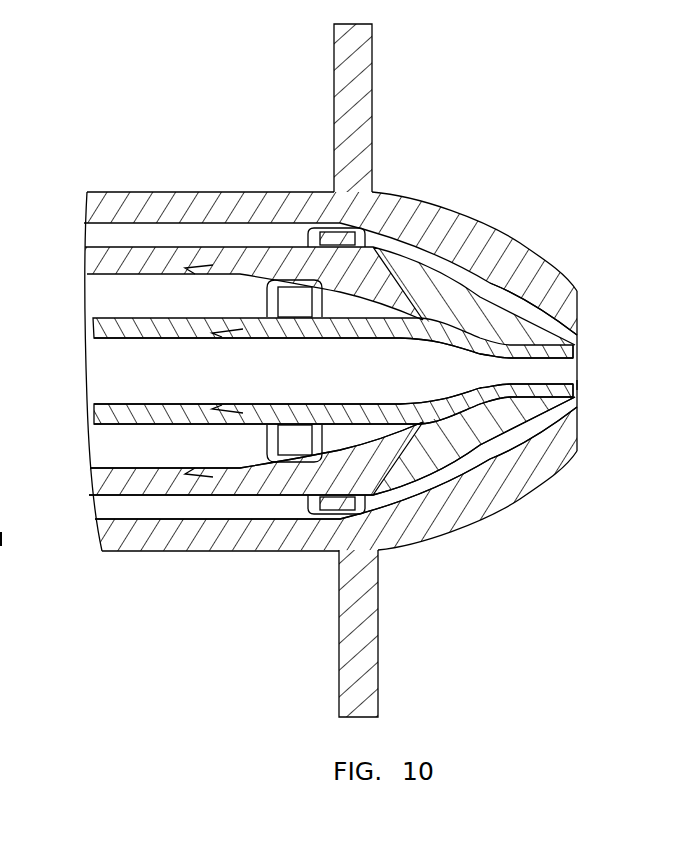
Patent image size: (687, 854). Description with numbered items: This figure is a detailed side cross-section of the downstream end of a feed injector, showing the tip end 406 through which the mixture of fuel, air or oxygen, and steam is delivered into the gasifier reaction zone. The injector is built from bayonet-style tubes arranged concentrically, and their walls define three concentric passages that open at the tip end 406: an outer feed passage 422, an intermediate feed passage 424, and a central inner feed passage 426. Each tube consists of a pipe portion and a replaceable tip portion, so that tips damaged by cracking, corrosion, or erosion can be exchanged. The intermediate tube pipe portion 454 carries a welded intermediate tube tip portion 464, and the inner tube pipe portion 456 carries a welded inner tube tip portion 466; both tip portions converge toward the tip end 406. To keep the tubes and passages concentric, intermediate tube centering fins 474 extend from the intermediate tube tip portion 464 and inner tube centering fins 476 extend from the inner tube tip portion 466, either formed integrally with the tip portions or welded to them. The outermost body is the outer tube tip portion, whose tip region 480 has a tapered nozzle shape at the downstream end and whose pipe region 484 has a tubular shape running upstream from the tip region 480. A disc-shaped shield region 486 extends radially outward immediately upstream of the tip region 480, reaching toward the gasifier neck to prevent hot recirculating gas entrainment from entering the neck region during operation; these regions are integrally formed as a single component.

The tip end 406 is at (587, 385).
The outer feed passage 422 is at (142, 507).
The intermediate feed passage 424 is at (142, 452).
The inner feed passage 426 is at (142, 373).
The intermediate tube pipe portion 454 is at (102, 247).
The inner tube pipe portion 456 is at (108, 400).
The intermediate tube tip portion 464 is at (480, 227).
The inner tube tip portion 466 is at (563, 385).
The intermediate tube centering fins 474 is at (312, 512).
The inner tube centering fins 476 is at (267, 452).
The tip region 480 is at (545, 270).
The pipe region 484 is at (168, 191).
The shield region 486 is at (372, 102).